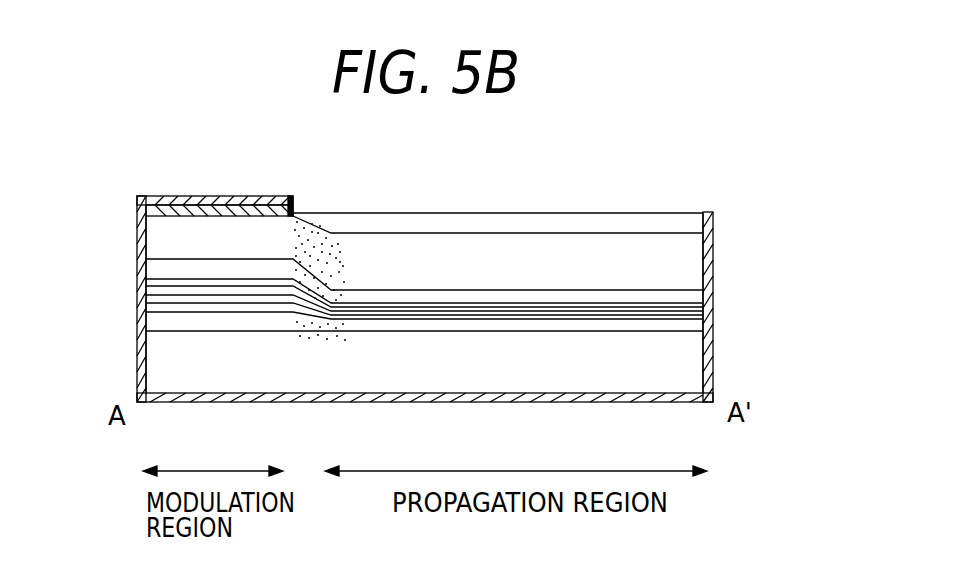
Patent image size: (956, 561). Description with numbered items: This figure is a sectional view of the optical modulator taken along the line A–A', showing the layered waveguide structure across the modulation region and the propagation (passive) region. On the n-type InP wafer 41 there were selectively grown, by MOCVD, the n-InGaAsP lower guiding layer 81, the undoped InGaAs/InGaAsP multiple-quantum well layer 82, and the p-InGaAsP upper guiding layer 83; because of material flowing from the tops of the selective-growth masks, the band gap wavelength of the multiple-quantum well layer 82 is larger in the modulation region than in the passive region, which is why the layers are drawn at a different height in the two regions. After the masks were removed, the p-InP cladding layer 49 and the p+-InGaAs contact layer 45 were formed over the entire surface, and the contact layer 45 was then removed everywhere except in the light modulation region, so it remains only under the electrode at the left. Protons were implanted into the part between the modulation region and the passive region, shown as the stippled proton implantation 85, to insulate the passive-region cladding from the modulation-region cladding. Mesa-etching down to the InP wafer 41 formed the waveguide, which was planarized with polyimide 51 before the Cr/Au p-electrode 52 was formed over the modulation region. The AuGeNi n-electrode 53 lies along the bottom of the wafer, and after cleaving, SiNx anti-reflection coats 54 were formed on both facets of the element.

The InP wafer 41 is at (695, 363).
The contact layer 45 is at (282, 204).
The p-InP cladding layer 49 is at (150, 237).
The polyimide 51 is at (681, 222).
The p-electrode 52 is at (213, 198).
The n-electrode 53 is at (652, 399).
The anti-reflection coat 54 is at (715, 252).
The lower guiding layer 81 is at (150, 322).
The multiple-quantum well layer 82 is at (131, 272).
The upper guiding layer 83 is at (150, 268).
The proton implantation 85 is at (342, 343).